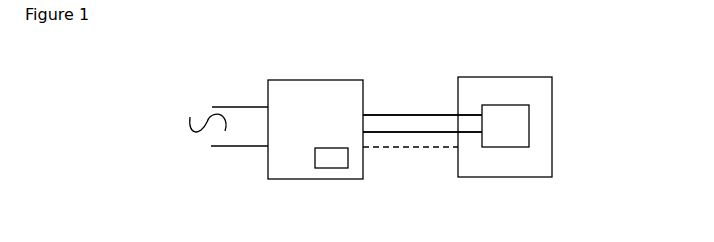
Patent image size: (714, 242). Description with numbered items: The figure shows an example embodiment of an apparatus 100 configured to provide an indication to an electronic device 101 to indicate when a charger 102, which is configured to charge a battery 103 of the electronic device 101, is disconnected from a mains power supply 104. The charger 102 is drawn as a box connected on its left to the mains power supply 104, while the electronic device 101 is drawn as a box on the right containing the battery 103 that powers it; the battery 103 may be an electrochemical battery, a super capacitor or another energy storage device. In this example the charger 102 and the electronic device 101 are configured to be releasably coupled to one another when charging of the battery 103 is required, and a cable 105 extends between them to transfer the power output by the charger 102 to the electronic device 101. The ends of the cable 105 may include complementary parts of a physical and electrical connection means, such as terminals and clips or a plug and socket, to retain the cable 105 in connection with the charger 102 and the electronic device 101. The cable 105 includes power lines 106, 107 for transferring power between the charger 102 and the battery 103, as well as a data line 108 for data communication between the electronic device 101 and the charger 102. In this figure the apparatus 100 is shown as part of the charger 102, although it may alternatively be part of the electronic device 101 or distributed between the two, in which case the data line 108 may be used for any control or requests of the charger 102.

The apparatus 100 is at (333, 158).
The electronic device 101 is at (507, 177).
The charger 102 is at (297, 80).
The battery 103 is at (529, 130).
The mains power supply 104 is at (206, 137).
The cable 105 is at (388, 95).
The power line 106 is at (440, 115).
The power line 107 is at (407, 135).
The data line 108 is at (432, 147).